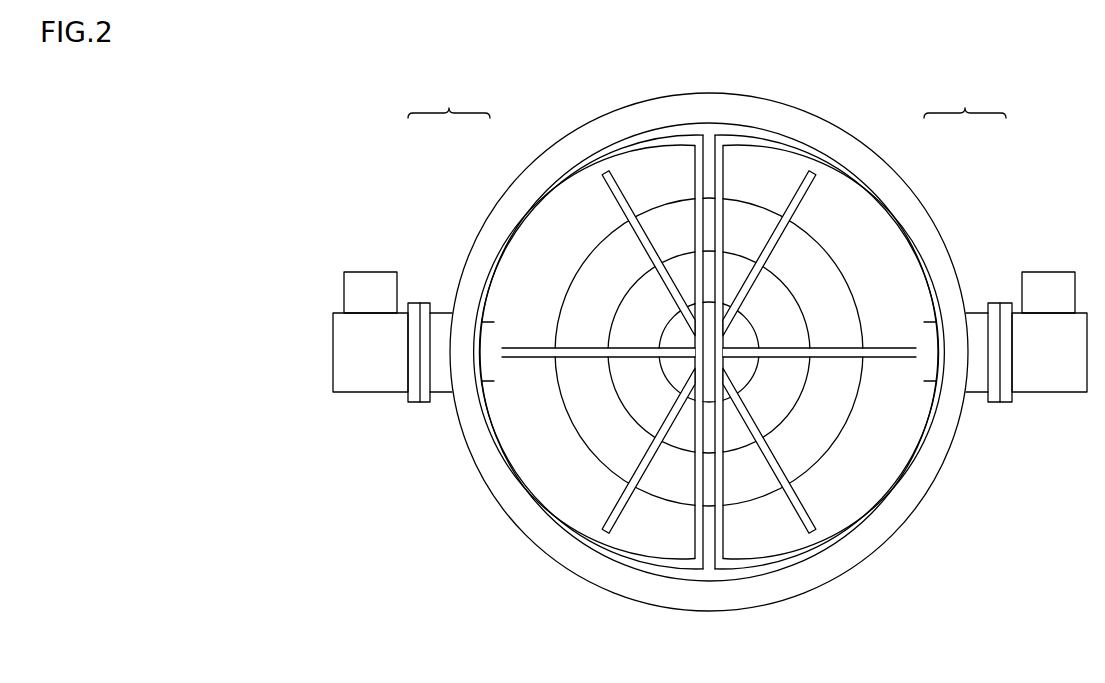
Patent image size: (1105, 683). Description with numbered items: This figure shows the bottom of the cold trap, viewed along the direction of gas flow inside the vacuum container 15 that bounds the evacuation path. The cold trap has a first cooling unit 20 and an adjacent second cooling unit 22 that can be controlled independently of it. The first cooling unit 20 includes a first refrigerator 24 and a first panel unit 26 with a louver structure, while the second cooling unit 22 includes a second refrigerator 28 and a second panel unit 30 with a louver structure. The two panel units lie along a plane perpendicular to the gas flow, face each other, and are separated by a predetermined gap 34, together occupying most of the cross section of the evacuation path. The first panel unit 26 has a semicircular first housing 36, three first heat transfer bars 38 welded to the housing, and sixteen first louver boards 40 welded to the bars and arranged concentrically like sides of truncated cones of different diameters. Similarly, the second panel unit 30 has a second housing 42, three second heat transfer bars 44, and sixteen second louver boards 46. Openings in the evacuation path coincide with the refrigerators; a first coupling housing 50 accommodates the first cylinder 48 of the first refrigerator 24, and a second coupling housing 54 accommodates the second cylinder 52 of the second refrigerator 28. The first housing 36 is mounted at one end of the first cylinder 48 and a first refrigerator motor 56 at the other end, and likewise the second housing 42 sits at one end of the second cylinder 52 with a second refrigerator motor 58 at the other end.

The vacuum container 15 is at (855, 547).
The first cooling unit 20 is at (417, 211).
The second cooling unit 22 is at (999, 211).
The first refrigerator 24 is at (380, 335).
The first panel unit 26 is at (562, 250).
The second refrigerator 28 is at (1040, 335).
The second panel unit 30 is at (856, 248).
The gap 34 is at (709, 165).
The first housing 36 is at (640, 152).
The first heat transfer bars 38 is at (603, 173).
The first louver boards 40 is at (670, 173).
The second housing 42 is at (790, 152).
The second heat transfer bars 44 is at (812, 172).
The second louver boards 46 is at (752, 165).
The first cylinder 48 is at (490, 381).
The first coupling housing 50 is at (444, 377).
The second cylinder 52 is at (932, 385).
The second coupling housing 54 is at (975, 380).
The first refrigerator motor 56 is at (353, 377).
The second refrigerator motor 58 is at (1067, 380).